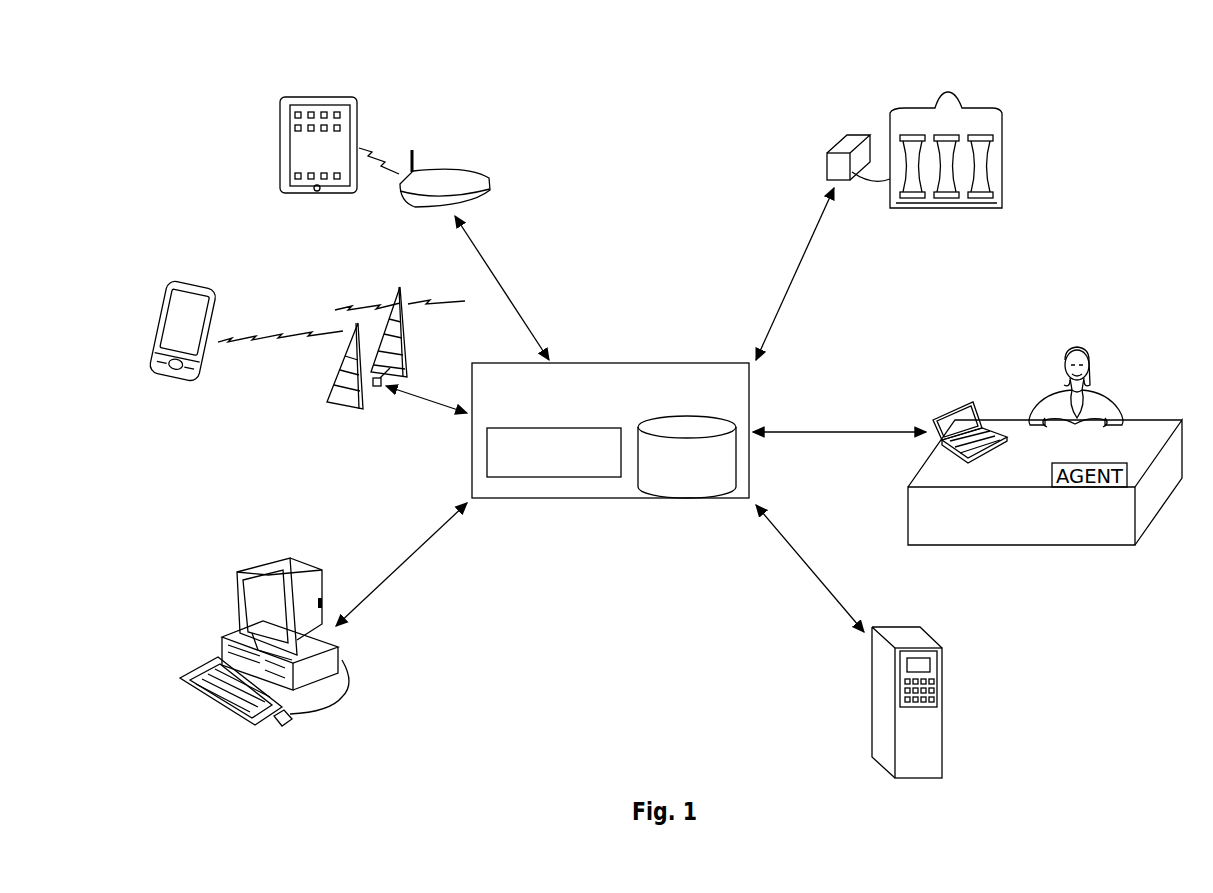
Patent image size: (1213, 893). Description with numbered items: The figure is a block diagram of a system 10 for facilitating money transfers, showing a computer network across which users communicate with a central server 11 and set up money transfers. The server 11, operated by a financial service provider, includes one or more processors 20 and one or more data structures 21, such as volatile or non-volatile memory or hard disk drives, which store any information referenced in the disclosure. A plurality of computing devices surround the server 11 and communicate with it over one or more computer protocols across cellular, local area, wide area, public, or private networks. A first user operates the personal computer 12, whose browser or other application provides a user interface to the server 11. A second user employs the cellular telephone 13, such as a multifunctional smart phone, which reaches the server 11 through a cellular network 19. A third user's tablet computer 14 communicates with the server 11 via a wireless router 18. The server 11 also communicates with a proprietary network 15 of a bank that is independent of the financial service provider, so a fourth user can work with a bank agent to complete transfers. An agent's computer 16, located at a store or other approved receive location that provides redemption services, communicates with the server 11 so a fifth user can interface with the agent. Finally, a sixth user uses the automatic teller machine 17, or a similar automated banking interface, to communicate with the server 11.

The system for facilitating money transfers 10 is at (636, 84).
The server 11 is at (610, 430).
The personal computer 12 is at (367, 709).
The cellular telephone 13 is at (186, 402).
The tablet computer 14 is at (306, 203).
The proprietary network 15 is at (826, 143).
The agent's computer 16 is at (933, 401).
The automatic teller machine 17 is at (936, 628).
The wireless router 18 is at (459, 160).
The cellular network 19 is at (367, 421).
The processor 20 is at (554, 452).
The data structure 21 is at (687, 457).